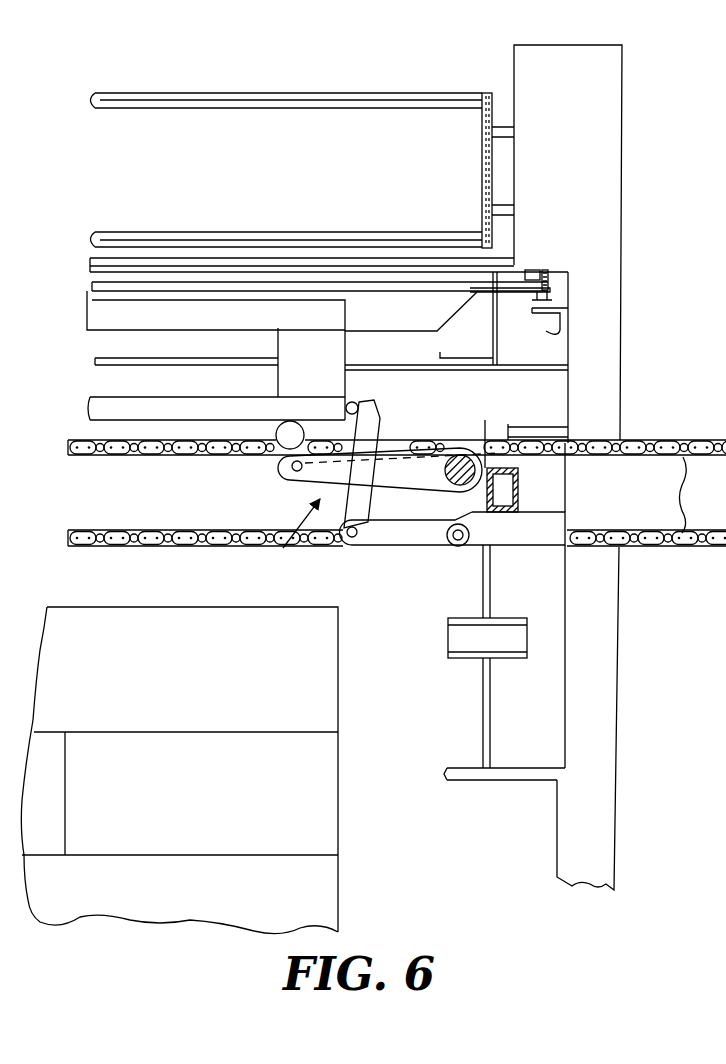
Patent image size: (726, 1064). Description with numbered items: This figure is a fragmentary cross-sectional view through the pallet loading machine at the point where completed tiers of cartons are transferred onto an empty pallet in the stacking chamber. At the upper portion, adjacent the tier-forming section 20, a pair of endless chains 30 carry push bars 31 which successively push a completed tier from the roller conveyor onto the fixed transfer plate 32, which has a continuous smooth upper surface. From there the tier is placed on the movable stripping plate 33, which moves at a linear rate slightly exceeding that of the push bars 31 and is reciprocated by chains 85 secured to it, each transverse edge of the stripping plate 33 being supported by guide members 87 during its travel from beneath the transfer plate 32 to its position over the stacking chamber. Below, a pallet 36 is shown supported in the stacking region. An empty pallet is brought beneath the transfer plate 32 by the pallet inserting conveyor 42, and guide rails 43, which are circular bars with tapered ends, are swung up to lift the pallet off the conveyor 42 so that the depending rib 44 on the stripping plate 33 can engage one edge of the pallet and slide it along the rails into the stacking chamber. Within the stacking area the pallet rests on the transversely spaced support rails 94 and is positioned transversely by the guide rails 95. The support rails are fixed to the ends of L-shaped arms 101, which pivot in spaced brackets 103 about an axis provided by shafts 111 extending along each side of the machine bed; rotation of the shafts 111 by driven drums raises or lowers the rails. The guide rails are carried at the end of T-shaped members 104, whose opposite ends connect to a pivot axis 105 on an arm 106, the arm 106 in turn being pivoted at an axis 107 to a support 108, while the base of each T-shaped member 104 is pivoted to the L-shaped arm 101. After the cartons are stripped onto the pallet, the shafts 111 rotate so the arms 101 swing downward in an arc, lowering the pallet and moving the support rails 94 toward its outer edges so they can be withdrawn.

The tier-forming section 20 is at (622, 43).
The endless chains 30 is at (482, 173).
The push bars 31 is at (281, 232).
The transfer plate 32 is at (90, 265).
The stripping plate 33 is at (92, 288).
The pallet 36 is at (92, 403).
The pallet inserting conveyor 42 is at (78, 528).
The guide rails 43 is at (288, 541).
The depending rib 44 is at (87, 326).
The chains 85 is at (552, 300).
The guide members 87 is at (565, 334).
The support rails 94 is at (287, 450).
The guide rails 95 is at (357, 403).
The L-shaped arms 101 is at (300, 492).
The brackets 103 is at (492, 440).
The T-shaped member 104 is at (366, 511).
The pivot axis 105 is at (353, 546).
The arm 106 is at (418, 547).
The axis 107 is at (458, 547).
The support 108 is at (512, 546).
The shafts 111 is at (460, 454).